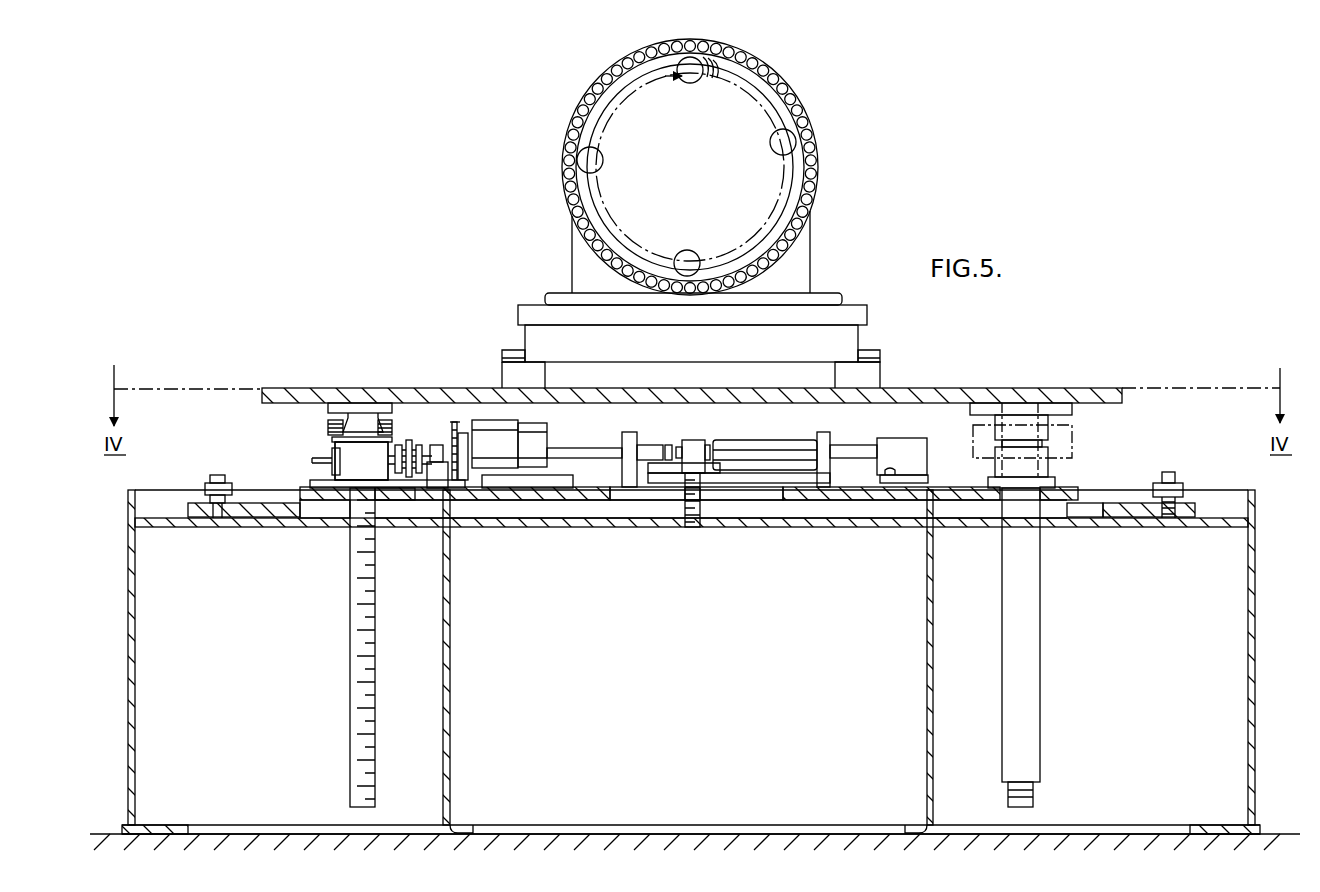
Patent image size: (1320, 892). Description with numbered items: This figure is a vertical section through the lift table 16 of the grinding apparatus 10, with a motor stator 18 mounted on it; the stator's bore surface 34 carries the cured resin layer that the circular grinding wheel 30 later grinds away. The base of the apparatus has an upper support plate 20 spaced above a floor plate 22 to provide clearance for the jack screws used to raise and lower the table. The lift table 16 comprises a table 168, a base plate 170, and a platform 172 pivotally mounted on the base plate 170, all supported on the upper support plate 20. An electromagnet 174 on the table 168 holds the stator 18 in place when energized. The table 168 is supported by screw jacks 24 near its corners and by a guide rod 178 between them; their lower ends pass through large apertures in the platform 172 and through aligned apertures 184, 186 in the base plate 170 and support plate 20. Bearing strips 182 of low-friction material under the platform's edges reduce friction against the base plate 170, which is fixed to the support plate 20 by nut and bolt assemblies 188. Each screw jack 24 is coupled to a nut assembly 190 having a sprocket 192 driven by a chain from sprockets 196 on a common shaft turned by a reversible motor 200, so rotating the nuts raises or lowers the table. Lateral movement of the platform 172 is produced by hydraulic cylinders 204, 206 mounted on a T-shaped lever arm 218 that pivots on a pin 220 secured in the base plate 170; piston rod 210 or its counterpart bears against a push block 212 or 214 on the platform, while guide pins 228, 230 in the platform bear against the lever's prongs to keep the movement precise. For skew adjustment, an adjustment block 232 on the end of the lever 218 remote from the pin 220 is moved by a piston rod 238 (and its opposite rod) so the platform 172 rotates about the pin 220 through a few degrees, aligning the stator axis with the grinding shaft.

The apparatus 10 is at (264, 874).
The lift table 16 is at (966, 440).
The motor stator 18 is at (817, 203).
The upper support plate 20 is at (210, 527).
The floor plate 22 is at (318, 838).
The screw jacks 24 is at (376, 721).
The circular grinding wheel 30 is at (688, 85).
The bore surface 34 is at (819, 131).
The table 168 is at (302, 388).
The base plate 170 is at (250, 503).
The platform 172 is at (412, 498).
The electromagnet 174 is at (674, 354).
The guide rod 178 is at (1034, 793).
The bearing strips 182 is at (325, 502).
The apertures 184 is at (306, 490).
The apertures 186 is at (302, 527).
The nut and bolt assemblies 188 is at (206, 484).
The nut assembly 190 is at (334, 449).
The sprocket 192 is at (384, 479).
The sprockets 196 is at (399, 446).
The reversible motor 200 is at (462, 490).
The hydraulic cylinder 204 is at (600, 448).
The hydraulic cylinder 206 is at (765, 445).
The piston rod 210 is at (850, 447).
The push block 212 is at (520, 425).
The push block 214 is at (898, 446).
The T-shaped lever arm 218 is at (708, 500).
The pivot pin 220 is at (686, 498).
The guide pins 228 is at (515, 490).
The guide pins 230 is at (902, 477).
The adjustment block 232 is at (700, 440).
The piston rod 238 is at (650, 447).